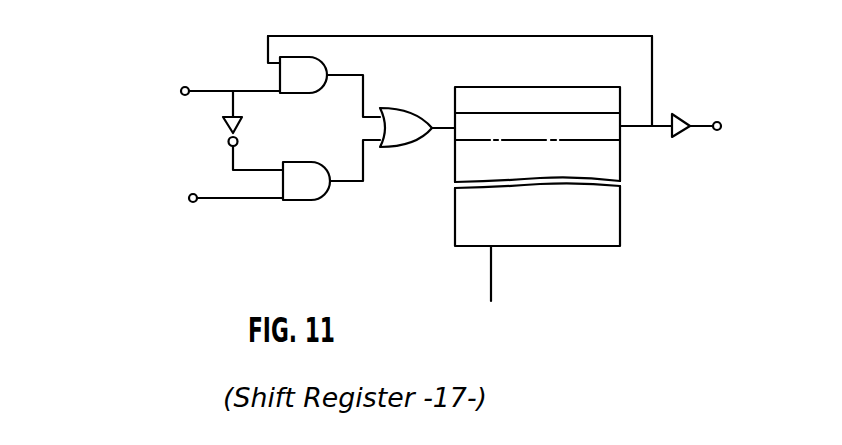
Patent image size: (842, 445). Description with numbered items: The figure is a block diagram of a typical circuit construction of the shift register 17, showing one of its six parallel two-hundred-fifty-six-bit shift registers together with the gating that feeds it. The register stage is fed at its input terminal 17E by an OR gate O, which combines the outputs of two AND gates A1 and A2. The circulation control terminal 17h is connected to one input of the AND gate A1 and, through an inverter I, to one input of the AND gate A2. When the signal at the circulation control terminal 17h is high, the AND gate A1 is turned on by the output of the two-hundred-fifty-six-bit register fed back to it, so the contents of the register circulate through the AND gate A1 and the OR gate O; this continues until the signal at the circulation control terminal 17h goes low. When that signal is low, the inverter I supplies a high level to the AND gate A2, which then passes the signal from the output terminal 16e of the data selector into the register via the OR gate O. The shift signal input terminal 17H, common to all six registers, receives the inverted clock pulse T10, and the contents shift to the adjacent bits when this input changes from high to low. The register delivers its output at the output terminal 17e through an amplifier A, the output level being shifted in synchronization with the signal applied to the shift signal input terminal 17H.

The circulation control terminal 17h is at (213, 99).
The output terminal of the data selector 16e is at (214, 197).
The inverter I is at (242, 126).
The AND gate A1 is at (324, 76).
The AND gate A2 is at (331, 170).
The OR gate O is at (406, 127).
The input terminal 17E is at (439, 111).
The shift register 17 is at (616, 221).
The shift signal input terminal 17H is at (537, 215).
The pulse from the clock generator T10 is at (506, 308).
The amplifier A is at (675, 135).
The output terminal 17e is at (739, 128).